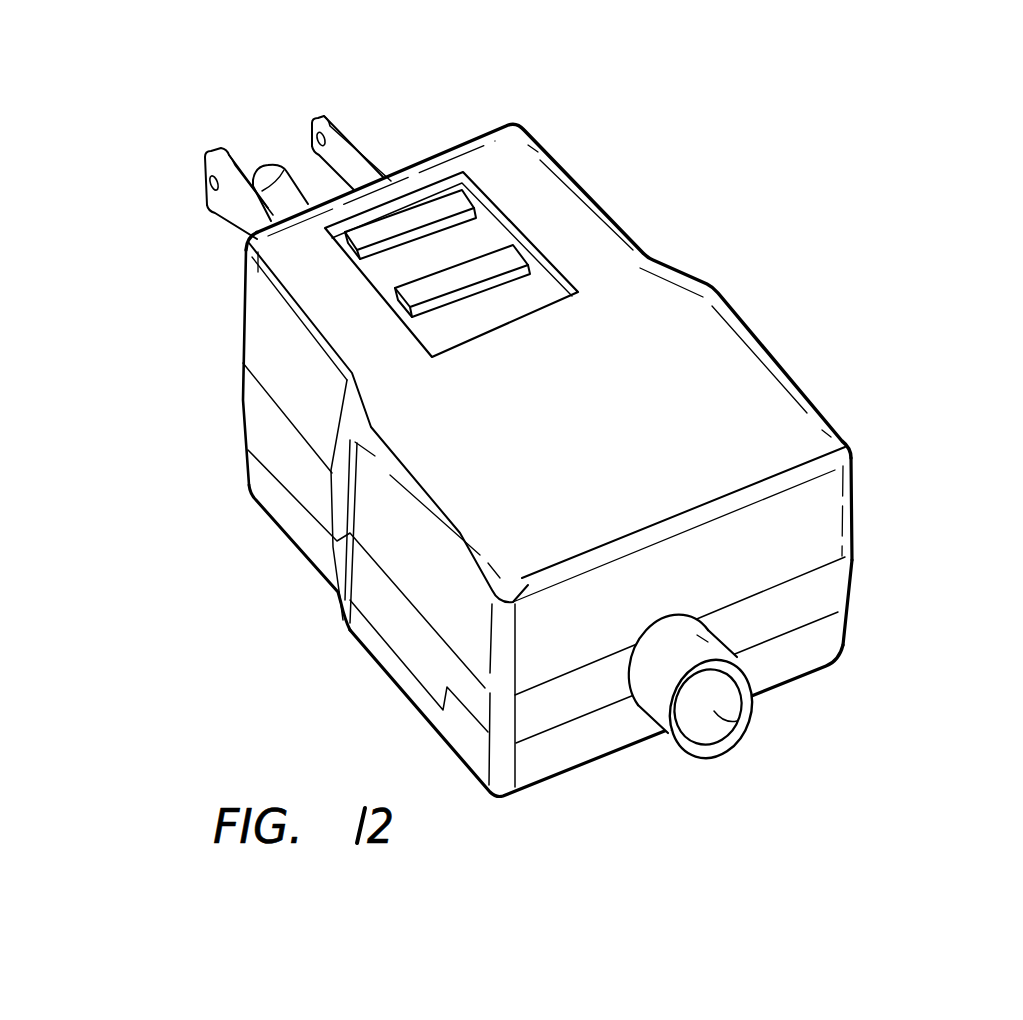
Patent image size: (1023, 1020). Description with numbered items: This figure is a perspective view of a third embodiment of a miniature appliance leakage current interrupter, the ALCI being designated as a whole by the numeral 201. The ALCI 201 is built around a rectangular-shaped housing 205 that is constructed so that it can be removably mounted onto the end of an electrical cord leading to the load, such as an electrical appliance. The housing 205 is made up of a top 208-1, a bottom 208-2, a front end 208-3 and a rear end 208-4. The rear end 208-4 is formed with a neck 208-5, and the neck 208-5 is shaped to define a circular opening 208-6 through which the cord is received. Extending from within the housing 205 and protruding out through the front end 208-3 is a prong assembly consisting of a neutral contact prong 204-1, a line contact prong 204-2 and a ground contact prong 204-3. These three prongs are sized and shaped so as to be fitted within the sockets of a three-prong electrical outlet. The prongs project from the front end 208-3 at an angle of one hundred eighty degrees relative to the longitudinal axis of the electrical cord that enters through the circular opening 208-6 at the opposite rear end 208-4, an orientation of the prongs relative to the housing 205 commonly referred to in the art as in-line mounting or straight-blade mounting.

The appliance leakage current interrupter 201 is at (327, 691).
The neutral contact prong 204-1 is at (200, 158).
The line contact prong 204-2 is at (313, 118).
The ground contact prong 204-3 is at (259, 166).
The housing 205 is at (877, 459).
The top 208-1 is at (678, 343).
The bottom 208-2 is at (822, 681).
The front end 208-3 is at (472, 131).
The rear end 208-4 is at (609, 716).
The neck 208-5 is at (713, 746).
The circular opening 208-6 is at (735, 721).